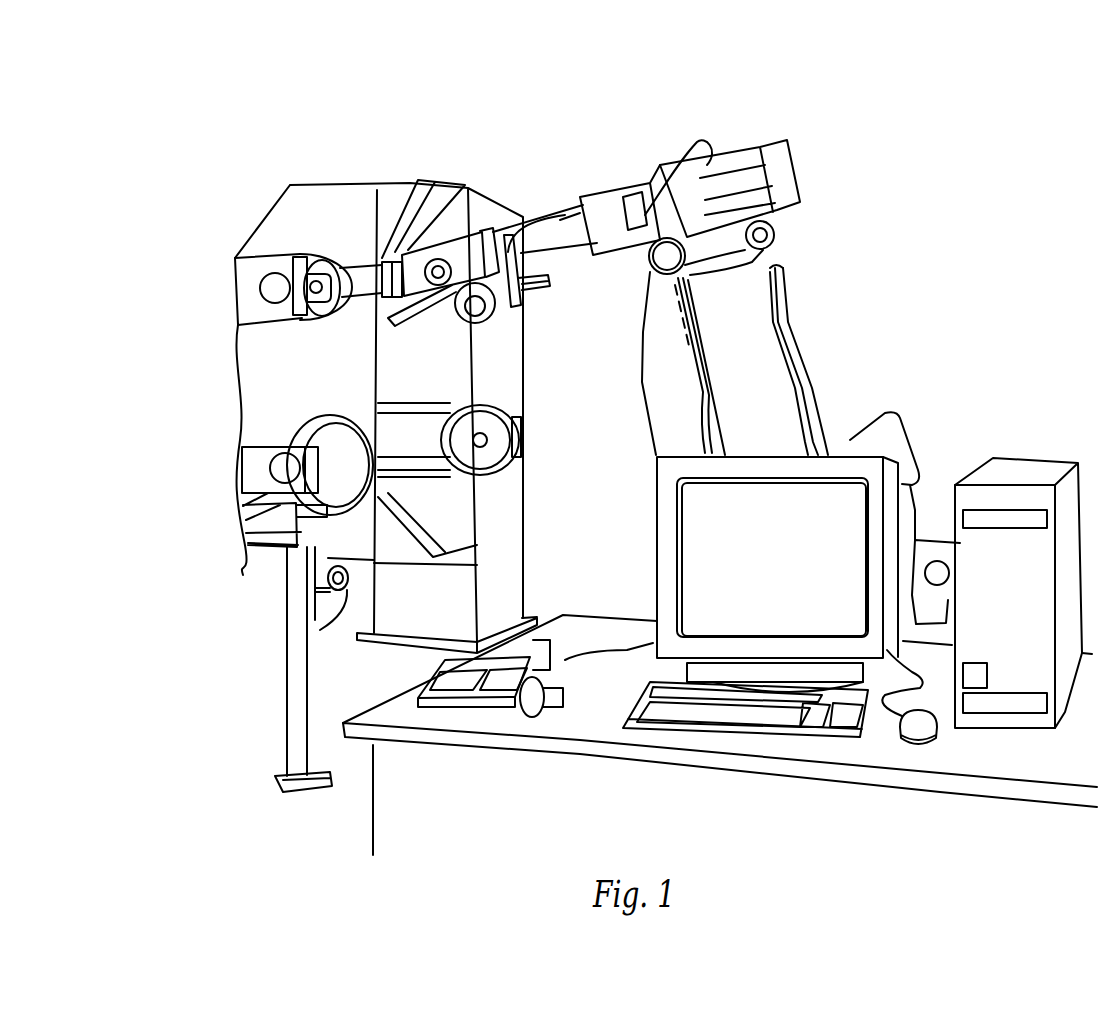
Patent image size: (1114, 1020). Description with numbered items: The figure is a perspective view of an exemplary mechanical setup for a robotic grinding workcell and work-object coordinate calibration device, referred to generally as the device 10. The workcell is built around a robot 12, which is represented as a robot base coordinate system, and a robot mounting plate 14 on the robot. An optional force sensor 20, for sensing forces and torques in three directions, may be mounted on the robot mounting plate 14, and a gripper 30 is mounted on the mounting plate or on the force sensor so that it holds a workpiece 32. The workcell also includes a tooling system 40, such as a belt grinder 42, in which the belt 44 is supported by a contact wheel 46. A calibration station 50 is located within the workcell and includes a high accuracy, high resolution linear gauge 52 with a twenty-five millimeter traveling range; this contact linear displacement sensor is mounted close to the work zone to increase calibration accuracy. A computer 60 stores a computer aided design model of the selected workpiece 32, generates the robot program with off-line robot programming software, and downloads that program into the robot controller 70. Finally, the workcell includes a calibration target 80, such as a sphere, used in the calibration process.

The robotic grinding workcell and work-object coordinate calibration device 10 is at (523, 158).
The robot 12 is at (567, 207).
The robot mounting plate 14 is at (395, 243).
The force sensor 20 is at (381, 258).
The gripper 30 is at (375, 252).
The workpiece 32 is at (273, 217).
The tooling system 40 is at (272, 388).
The belt grinder 42 is at (263, 455).
The belt 44 is at (267, 418).
The contact wheel 46 is at (283, 482).
The calibration station 50 is at (300, 575).
The linear gauge 52 is at (247, 521).
The computer 60 is at (1027, 470).
The robot controller 70 is at (463, 687).
The calibration target 80 is at (320, 630).